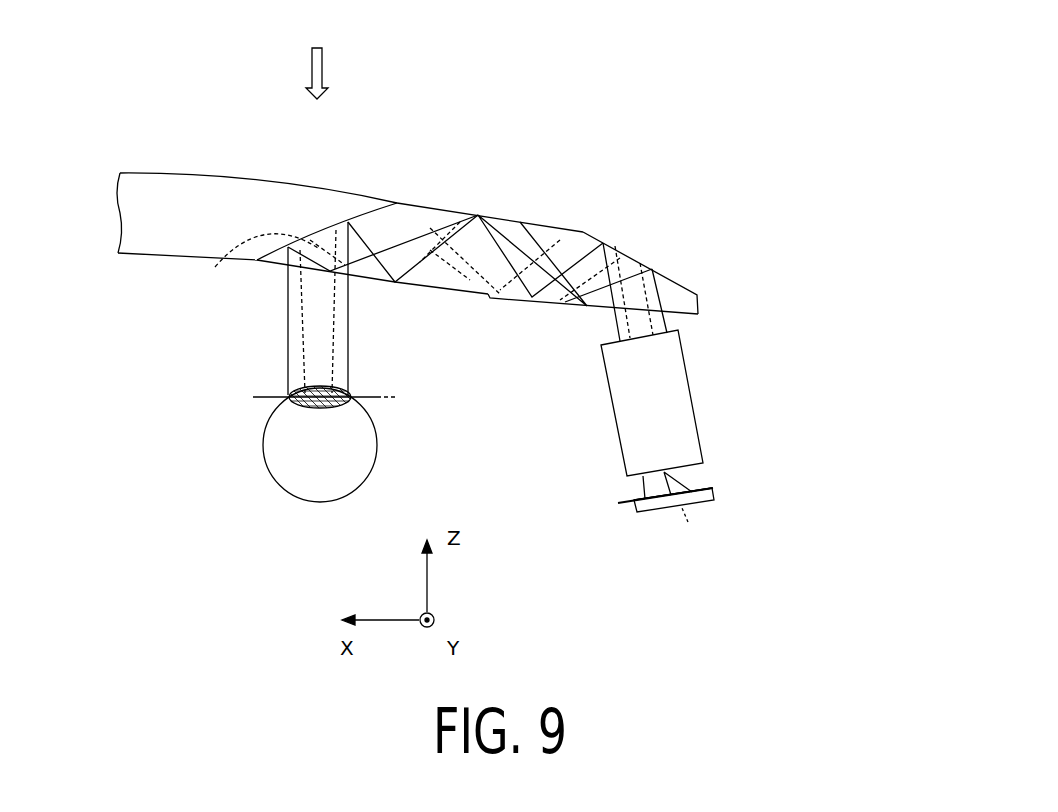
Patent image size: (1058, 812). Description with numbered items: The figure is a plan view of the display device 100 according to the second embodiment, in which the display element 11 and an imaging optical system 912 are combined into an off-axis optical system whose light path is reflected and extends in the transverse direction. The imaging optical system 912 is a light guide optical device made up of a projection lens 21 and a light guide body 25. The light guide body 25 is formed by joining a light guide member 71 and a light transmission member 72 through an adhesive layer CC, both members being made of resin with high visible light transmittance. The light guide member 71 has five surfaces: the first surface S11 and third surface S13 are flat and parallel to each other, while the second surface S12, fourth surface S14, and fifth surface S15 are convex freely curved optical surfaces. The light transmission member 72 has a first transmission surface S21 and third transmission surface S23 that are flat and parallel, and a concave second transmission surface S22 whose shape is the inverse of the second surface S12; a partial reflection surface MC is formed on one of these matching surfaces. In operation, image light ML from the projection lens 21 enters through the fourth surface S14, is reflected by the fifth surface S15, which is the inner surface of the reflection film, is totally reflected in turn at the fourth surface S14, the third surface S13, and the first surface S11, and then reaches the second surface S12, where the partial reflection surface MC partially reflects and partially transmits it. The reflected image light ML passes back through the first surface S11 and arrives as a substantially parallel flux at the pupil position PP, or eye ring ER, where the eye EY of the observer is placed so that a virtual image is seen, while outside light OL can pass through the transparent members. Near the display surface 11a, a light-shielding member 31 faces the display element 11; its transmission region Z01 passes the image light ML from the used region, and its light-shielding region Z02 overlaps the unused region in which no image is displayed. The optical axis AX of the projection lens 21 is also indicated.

The display device 100 is at (588, 77).
The light transmission member 72 is at (205, 190).
The third transmission surface S23 is at (270, 186).
The first transmission surface S21 is at (250, 262).
The second transmission surface S22 is at (364, 205).
The adhesive layer CC is at (305, 236).
The second surface S12 is at (332, 226).
The third surface S13 is at (494, 215).
The fourth surface S14 is at (556, 312).
The first surface S11 is at (369, 283).
The fifth surface S15 is at (665, 276).
The light guide member 71 is at (564, 228).
The light guide body 25 is at (603, 200).
The imaging optical system 912 is at (748, 259).
The partial reflection surface MC is at (240, 240).
The image light ML is at (283, 335).
The projection lens 21 is at (686, 399).
The display element 11 is at (670, 512).
The display surface 11a is at (640, 513).
The light-shielding member 31 is at (715, 491).
The transmission region Z01 is at (700, 489).
The light-shielding region Z02 is at (718, 490).
The optical axis AX is at (688, 522).
The eye EY is at (275, 446).
The pupil position PP is at (395, 398).
The eye ring ER is at (352, 401).
The outside light OL is at (308, 86).